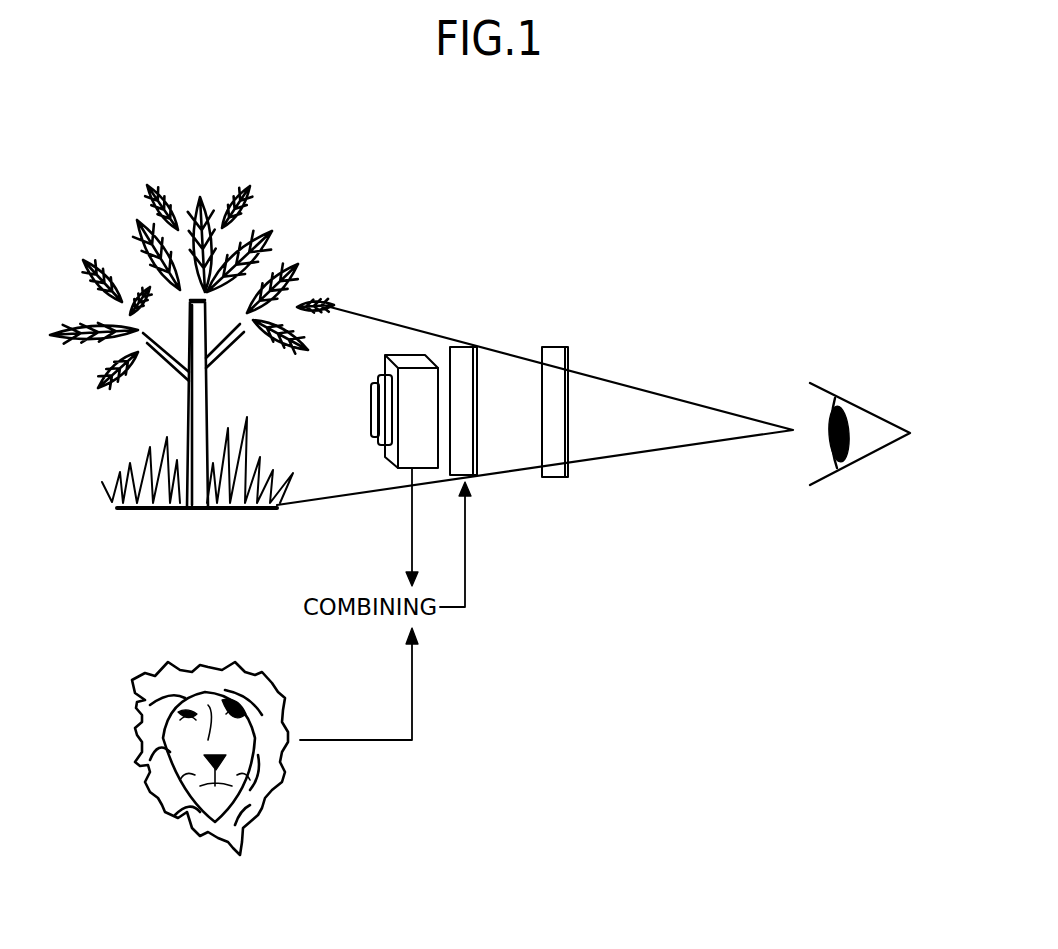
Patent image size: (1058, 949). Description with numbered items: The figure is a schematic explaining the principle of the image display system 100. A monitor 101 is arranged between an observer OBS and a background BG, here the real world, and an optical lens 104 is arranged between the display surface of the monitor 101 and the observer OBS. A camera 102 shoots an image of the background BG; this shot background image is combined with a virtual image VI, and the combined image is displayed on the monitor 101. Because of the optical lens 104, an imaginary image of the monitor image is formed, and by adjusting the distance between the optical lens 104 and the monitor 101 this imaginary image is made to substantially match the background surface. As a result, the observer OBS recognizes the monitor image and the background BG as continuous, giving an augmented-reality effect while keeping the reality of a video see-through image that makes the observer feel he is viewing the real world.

The image display system 100 is at (702, 136).
The monitor 101 is at (467, 352).
The camera 102 is at (407, 358).
The optical lens 104 is at (553, 477).
The background BG is at (192, 375).
The observer OBS is at (861, 411).
The virtual image VI is at (302, 741).